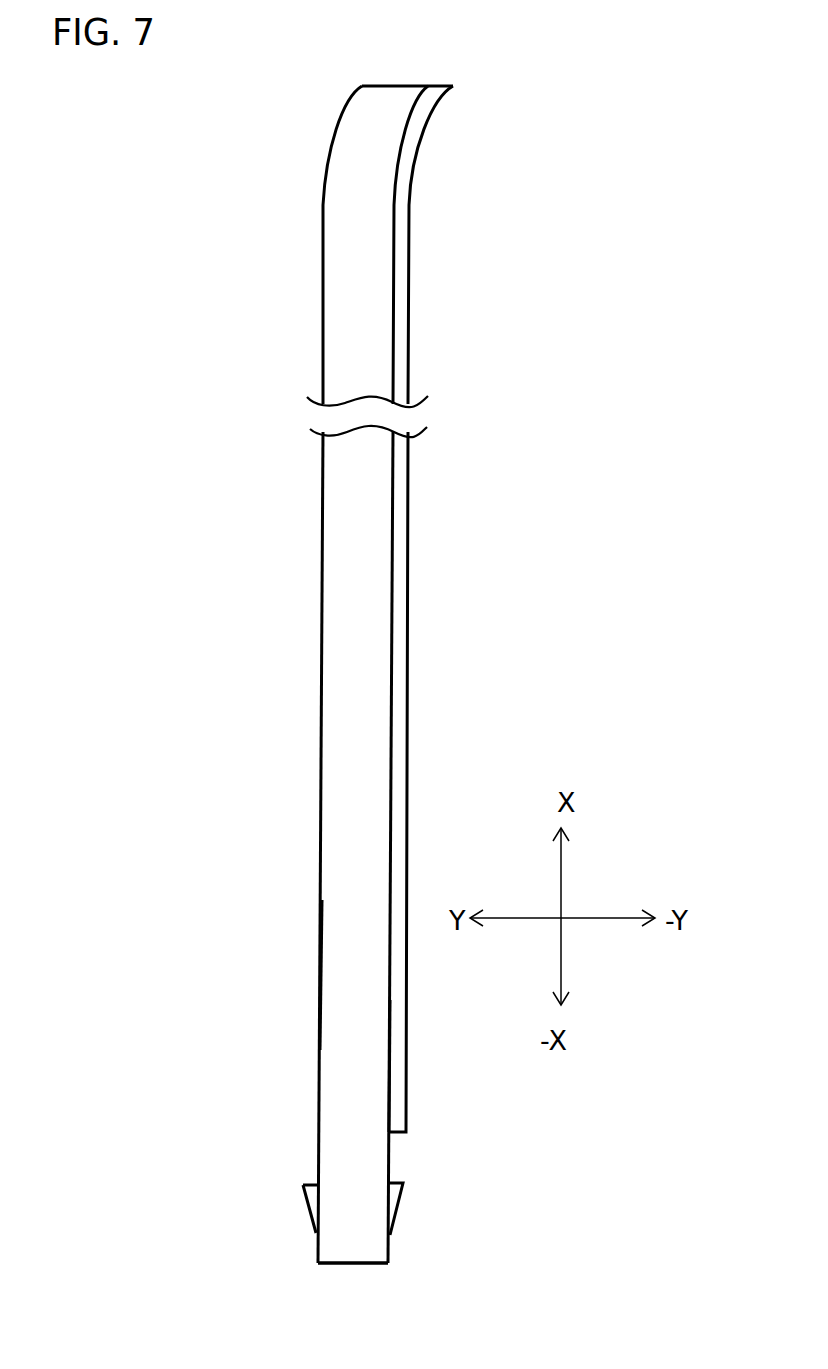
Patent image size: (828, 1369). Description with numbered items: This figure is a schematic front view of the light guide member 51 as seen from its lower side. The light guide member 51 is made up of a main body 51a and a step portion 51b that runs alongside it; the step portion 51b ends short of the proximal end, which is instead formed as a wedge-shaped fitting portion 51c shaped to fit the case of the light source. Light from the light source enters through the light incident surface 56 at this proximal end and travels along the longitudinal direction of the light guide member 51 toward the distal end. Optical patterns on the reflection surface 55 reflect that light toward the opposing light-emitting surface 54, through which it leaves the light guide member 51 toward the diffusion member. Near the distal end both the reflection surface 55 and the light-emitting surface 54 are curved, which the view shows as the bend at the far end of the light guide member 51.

The light guide member 51 is at (391, 1163).
The main body 51a is at (360, 563).
The step portion 51b is at (400, 678).
The fitting portion 51c is at (400, 1210).
The light-emitting surface 54 is at (318, 995).
The reflection surface 55 is at (390, 1060).
The light incident surface 56 is at (370, 1263).